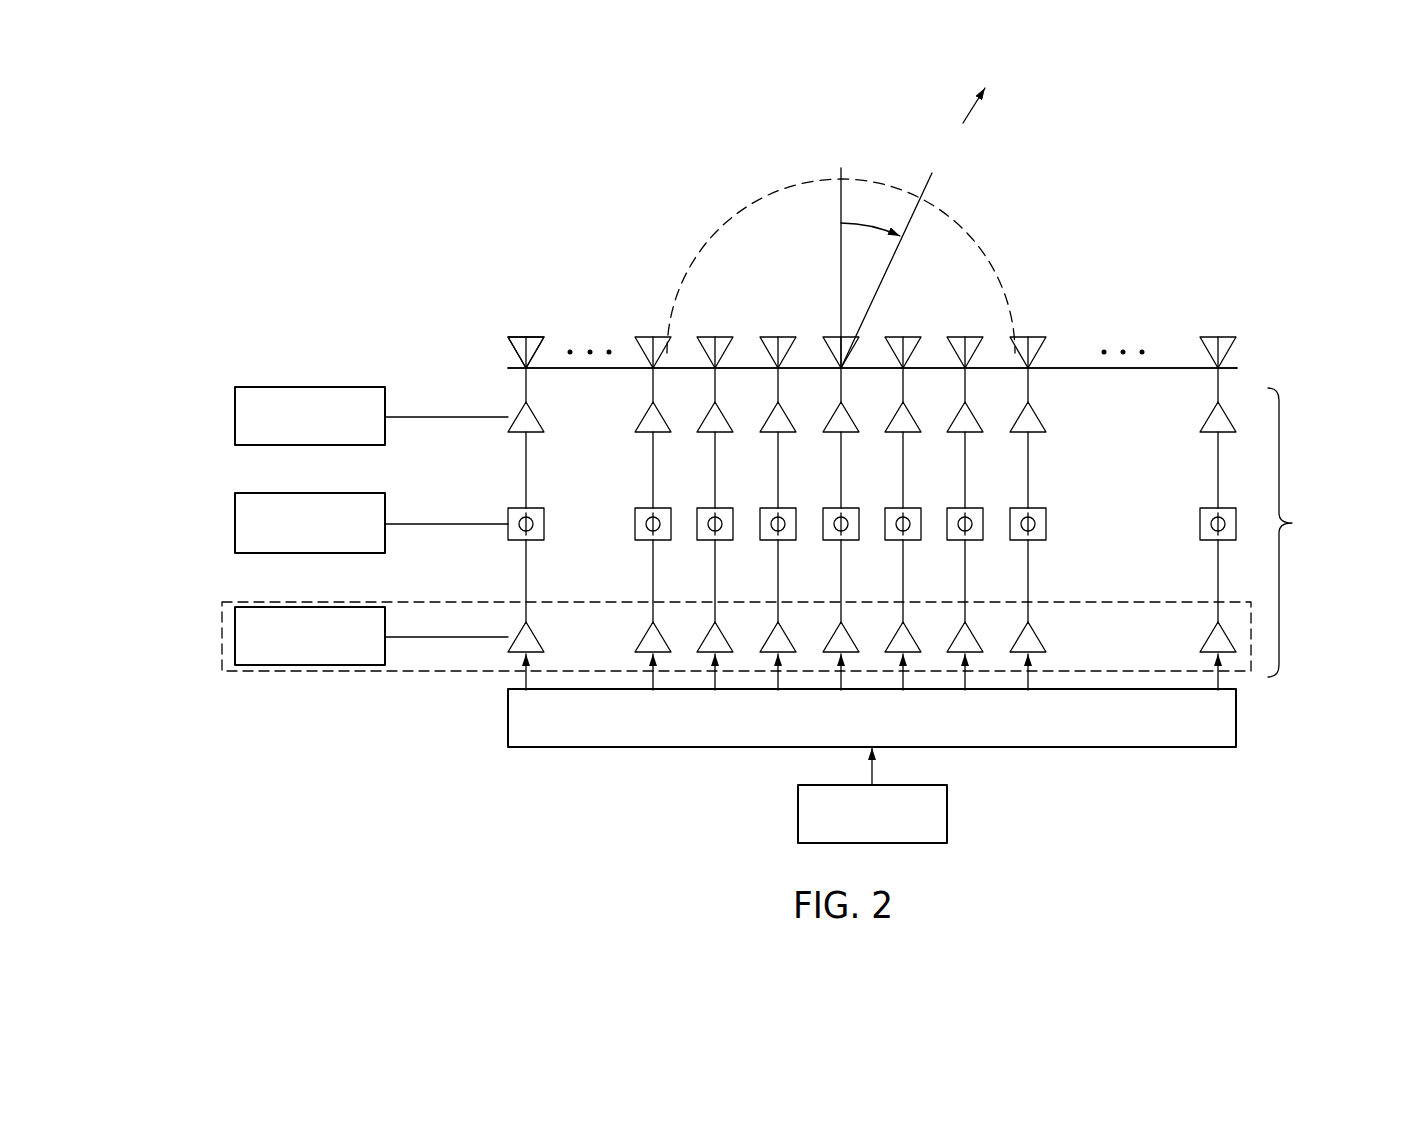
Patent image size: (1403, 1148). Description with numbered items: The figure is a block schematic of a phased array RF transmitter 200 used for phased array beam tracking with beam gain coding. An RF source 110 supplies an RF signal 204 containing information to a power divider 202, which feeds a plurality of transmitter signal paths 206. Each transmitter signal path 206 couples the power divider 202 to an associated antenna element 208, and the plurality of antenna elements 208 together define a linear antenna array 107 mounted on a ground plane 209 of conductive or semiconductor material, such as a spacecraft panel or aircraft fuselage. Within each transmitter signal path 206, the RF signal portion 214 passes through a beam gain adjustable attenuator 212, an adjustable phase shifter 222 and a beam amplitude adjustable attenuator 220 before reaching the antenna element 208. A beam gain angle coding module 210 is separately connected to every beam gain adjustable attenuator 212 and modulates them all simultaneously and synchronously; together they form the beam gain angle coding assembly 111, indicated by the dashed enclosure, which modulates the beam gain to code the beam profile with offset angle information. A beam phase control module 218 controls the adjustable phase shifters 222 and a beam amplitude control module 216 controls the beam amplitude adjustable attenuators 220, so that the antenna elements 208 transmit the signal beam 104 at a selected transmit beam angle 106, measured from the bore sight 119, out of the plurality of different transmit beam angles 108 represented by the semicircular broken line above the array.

The phased array RF transmitter 200 is at (350, 287).
The antenna array 107 is at (508, 343).
The antenna elements 208 is at (532, 337).
The ground plane 209 is at (1233, 368).
The beam amplitude adjustable attenuator 220 is at (542, 417).
The adjustable phase shifter 222 is at (545, 524).
The beam gain adjustable attenuator 212 is at (540, 636).
The RF signal portion 214 is at (528, 662).
The transmitter signal paths 206 is at (1307, 532).
The beam amplitude control module 216 is at (301, 387).
The beam phase control module 218 is at (301, 493).
The beam gain angle coding module 210 is at (303, 607).
The beam gain angle coding assembly 111 is at (414, 671).
The power divider 202 is at (508, 719).
The RF signal 204 is at (873, 776).
The RF source 110 is at (798, 820).
The bore sight 119 is at (841, 264).
The plurality of different transmit beam angles 108 is at (976, 253).
The signal beam 104 is at (978, 150).
The selected transmit beam angle 106 is at (867, 221).